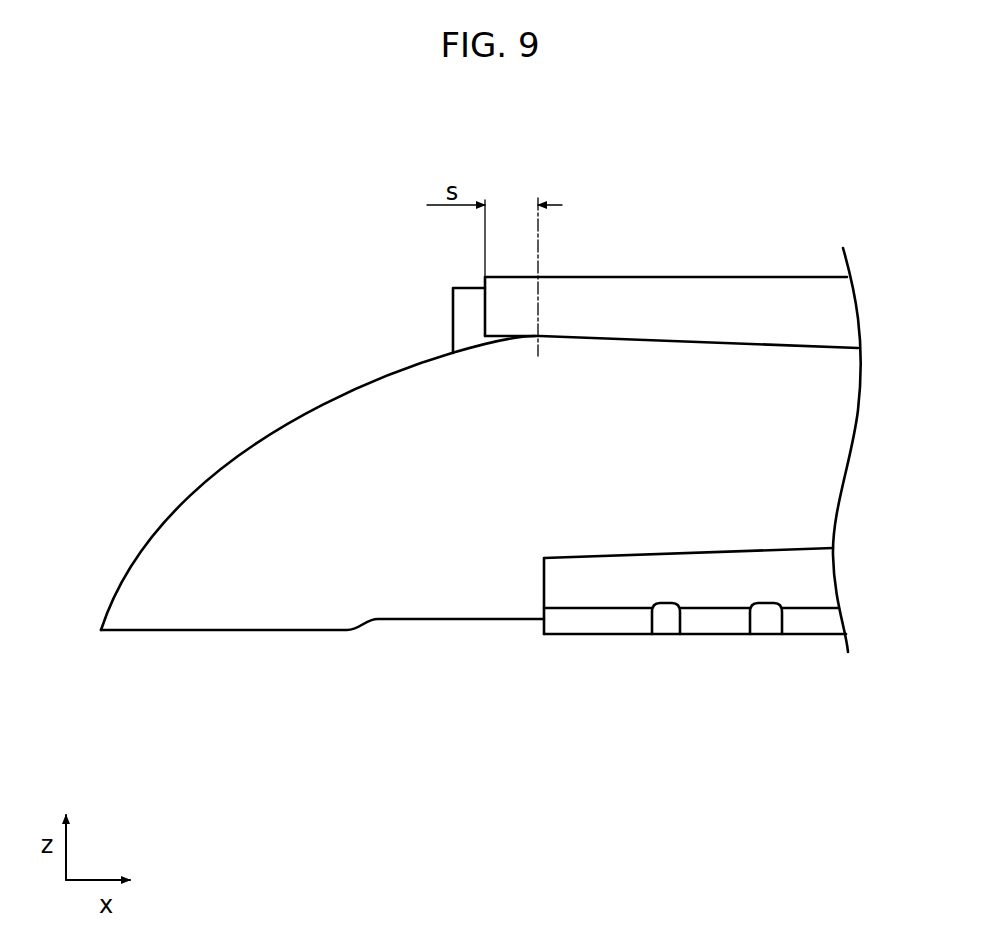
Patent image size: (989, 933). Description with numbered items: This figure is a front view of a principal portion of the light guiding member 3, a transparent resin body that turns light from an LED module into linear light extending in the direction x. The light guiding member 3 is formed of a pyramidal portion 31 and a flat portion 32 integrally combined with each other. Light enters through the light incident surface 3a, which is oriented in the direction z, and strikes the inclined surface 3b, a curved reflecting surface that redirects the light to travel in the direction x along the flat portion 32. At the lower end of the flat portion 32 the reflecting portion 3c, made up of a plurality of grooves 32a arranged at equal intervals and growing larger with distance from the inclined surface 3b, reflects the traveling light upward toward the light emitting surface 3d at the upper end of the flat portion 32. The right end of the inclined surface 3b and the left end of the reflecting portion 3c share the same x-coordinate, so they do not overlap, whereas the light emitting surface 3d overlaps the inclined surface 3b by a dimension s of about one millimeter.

The light guiding member 3 is at (311, 350).
The light incident surface 3a is at (224, 632).
The inclined surface 3b is at (235, 458).
The reflecting portion 3c is at (637, 622).
The light emitting surface 3d is at (655, 277).
The pyramidal portion 31 is at (815, 470).
The flat portion 32 is at (835, 326).
The grooves 32a is at (668, 628).